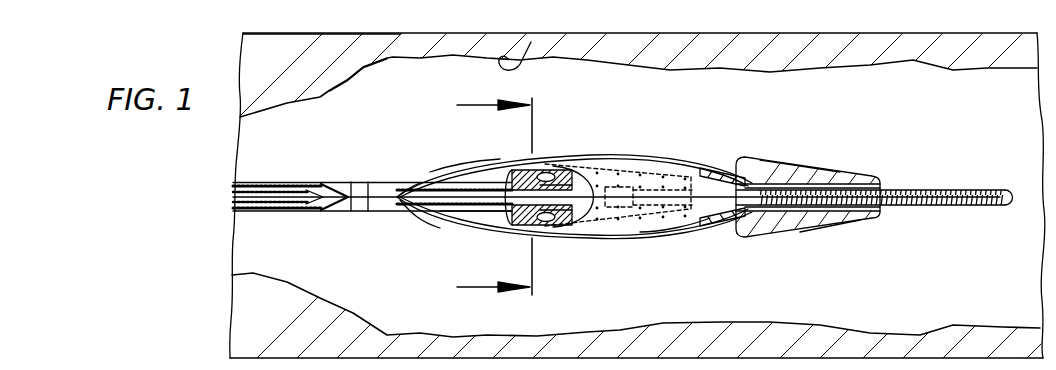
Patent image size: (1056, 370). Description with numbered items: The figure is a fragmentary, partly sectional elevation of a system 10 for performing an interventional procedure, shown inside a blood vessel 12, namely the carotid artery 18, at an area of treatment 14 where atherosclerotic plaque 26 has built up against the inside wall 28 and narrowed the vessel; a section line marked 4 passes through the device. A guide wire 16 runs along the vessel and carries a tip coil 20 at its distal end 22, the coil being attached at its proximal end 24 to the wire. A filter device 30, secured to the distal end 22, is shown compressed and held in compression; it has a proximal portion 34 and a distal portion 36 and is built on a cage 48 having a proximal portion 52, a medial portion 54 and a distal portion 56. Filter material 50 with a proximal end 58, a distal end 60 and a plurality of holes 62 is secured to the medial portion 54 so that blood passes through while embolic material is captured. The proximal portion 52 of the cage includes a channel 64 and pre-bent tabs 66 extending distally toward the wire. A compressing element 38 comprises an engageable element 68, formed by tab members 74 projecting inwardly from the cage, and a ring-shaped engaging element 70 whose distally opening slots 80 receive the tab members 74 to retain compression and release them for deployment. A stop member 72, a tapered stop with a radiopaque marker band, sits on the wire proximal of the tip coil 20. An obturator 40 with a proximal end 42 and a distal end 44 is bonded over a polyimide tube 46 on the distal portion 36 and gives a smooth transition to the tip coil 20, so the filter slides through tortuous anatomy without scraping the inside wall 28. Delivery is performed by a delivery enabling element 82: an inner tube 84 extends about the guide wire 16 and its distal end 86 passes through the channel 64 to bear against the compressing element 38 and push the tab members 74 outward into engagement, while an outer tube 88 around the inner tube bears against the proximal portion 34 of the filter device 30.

The section line 4- 4 is at (504, 198).
The system 10 is at (453, 222).
The blood vessel 12 is at (436, 40).
The area of treatment 14 is at (373, 57).
The guide wire 16 is at (278, 197).
The carotid artery 18 is at (705, 50).
The tip coil 20 is at (902, 188).
The distal end 22 is at (982, 202).
The proximal end 24 is at (795, 211).
The atherosclerotic plaque 26 is at (327, 55).
The inside wall 28 is at (531, 42).
The filter device 30 is at (640, 160).
The proximal portion 34 is at (465, 168).
The distal portion 36 is at (692, 178).
The compressing element 38 is at (510, 222).
The obturator 40 is at (813, 158).
The proximal end 42 is at (747, 237).
The distal end 44 is at (852, 218).
The tube 46 is at (805, 176).
The cage 48 is at (540, 170).
The filter material 50 is at (674, 172).
The proximal portion 52 is at (420, 180).
The medial portion 54 is at (562, 233).
The distal portion 56 is at (677, 233).
The proximal end 58 is at (615, 160).
The distal end 60 is at (747, 187).
The holes 62 is at (641, 220).
The channel 64 is at (340, 199).
The tab 66 is at (423, 206).
The engageable element 68 is at (545, 237).
The engaging element 70 is at (482, 212).
The stop member 72 is at (617, 208).
The tab member 74 is at (528, 173).
The slot 80 is at (517, 222).
The delivery enabling element 82 is at (284, 187).
The inner tube 84 is at (441, 188).
The distal end 86 is at (503, 184).
The outer tube 88 is at (248, 182).